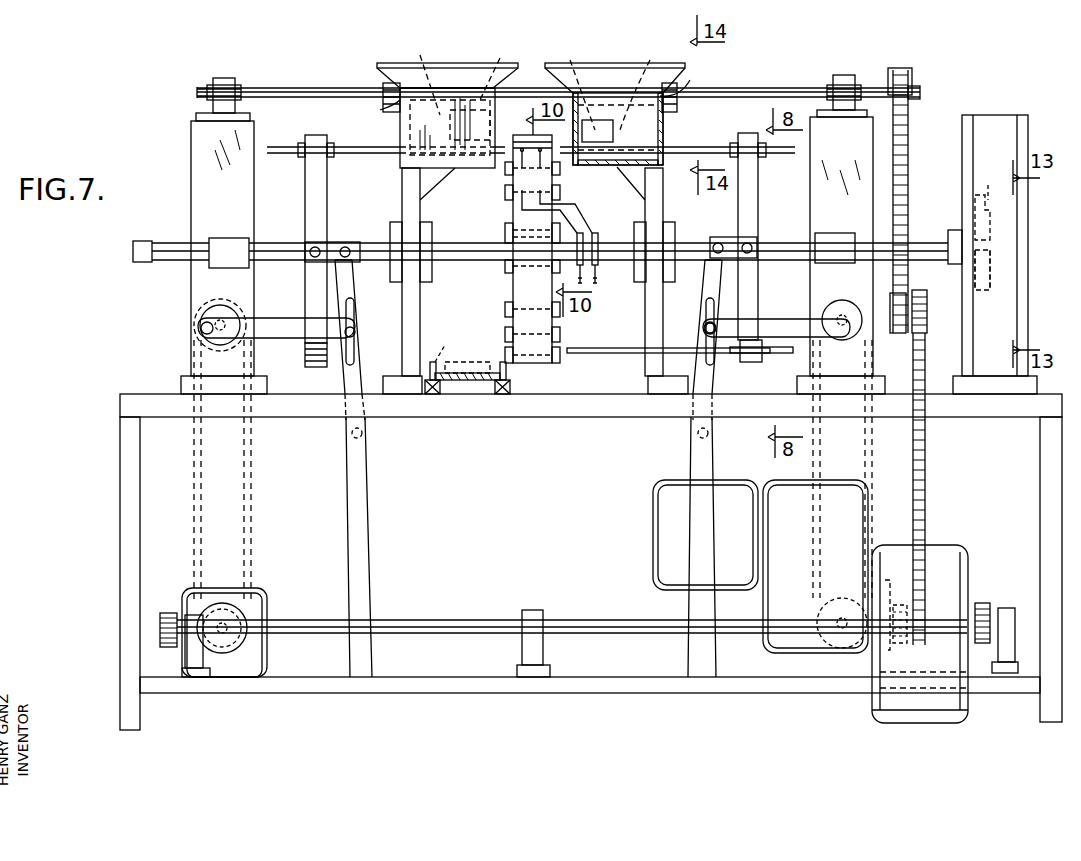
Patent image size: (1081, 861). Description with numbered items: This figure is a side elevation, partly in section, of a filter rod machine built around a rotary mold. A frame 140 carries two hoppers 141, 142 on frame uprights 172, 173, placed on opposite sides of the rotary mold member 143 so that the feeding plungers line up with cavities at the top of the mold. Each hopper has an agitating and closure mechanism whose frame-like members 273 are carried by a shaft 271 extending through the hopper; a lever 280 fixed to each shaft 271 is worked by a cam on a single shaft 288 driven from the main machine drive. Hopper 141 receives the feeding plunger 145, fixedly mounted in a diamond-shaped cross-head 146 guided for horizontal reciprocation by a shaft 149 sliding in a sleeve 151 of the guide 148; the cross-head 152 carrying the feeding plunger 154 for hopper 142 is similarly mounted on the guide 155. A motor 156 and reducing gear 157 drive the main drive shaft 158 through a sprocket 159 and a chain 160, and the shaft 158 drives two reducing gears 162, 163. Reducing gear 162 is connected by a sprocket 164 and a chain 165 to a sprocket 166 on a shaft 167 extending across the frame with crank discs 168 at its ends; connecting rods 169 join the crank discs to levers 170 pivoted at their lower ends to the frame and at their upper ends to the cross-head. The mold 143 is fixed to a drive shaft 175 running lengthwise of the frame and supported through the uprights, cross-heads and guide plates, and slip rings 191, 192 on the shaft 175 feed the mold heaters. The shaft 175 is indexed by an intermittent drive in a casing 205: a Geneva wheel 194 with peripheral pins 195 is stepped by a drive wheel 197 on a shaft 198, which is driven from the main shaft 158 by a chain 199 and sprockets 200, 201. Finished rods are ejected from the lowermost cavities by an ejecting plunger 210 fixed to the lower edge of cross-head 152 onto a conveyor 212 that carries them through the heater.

The frame 140 is at (105, 499).
The hopper 141 is at (458, 65).
The hopper 142 is at (615, 65).
The rotary mold member 143 is at (522, 135).
The feeding plunger 145 is at (352, 145).
The cross-head 146 is at (327, 206).
The guide 148 is at (193, 189).
The shaft 149 is at (172, 262).
The sleeve 151 is at (226, 238).
The cross-head 152 is at (738, 218).
The feeding plunger 154 is at (700, 147).
The guide 155 is at (809, 183).
The motor 156 is at (658, 508).
The reducing gear 157 is at (948, 548).
The main drive shaft 158 is at (476, 620).
The sprocket 159 is at (1003, 608).
The chain 160 is at (983, 603).
The reducing gear 162 is at (800, 610).
The reducing gear 163 is at (264, 597).
The sprocket 164 is at (218, 603).
The chain 165 is at (251, 469).
The sprocket 166 is at (228, 345).
The shaft 167 is at (815, 300).
The crank disc 168 is at (200, 318).
The connecting rod 169 is at (285, 337).
The lever 170 is at (354, 296).
The frame upright 172 is at (402, 183).
The frame upright 173 is at (655, 183).
The drive shaft 175 is at (618, 262).
The slip ring 191 is at (582, 236).
The slip ring 192 is at (600, 228).
The Geneva wheel 194 is at (1007, 246).
The cylindrical pin 195 is at (990, 184).
The drive wheel 197 is at (1016, 320).
The shaft 198 is at (937, 320).
The chain 199 is at (927, 462).
The sprocket 200 is at (915, 300).
The sprocket 201 is at (912, 612).
The casing 205 is at (997, 115).
The ejecting plunger 210 is at (610, 348).
The conveyor 212 is at (470, 362).
The shaft 271 is at (537, 81).
The frame-like member 273 is at (536, 81).
The lever 280 is at (350, 108).
The shaft 288 is at (323, 88).